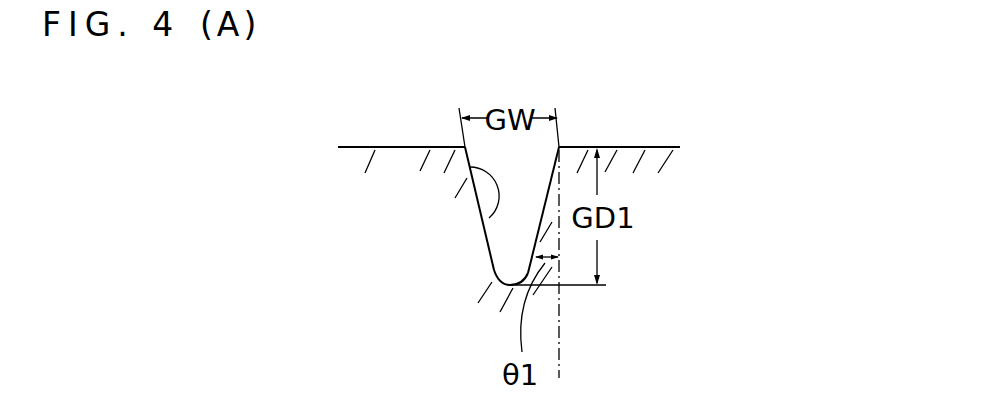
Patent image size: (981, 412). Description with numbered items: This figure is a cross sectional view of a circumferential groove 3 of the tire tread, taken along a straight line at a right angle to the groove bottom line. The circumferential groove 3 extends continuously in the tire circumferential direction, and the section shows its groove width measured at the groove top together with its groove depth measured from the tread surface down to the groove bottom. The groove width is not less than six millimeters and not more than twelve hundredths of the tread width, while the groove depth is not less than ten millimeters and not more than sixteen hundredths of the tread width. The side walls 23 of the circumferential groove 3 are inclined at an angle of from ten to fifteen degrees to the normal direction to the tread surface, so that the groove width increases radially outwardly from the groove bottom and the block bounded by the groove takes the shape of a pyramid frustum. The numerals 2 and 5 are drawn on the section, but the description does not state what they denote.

The substrate surface 2 is at (413, 147).
The circumferential groove 3 is at (484, 189).
The substrate material 5 is at (400, 185).
The side walls 23 is at (478, 217).